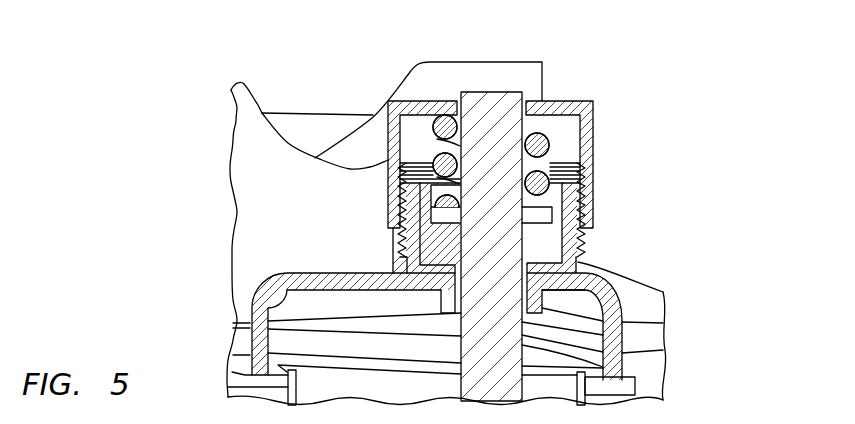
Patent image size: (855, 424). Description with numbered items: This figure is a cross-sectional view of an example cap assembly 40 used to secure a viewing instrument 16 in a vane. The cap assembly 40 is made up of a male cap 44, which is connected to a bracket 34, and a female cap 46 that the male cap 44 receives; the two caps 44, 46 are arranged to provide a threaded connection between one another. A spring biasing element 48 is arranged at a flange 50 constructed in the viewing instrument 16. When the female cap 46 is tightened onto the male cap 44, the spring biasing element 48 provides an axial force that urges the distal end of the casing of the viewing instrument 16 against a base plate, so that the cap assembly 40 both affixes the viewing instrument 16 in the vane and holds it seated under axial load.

The viewing instrument 16 is at (492, 110).
The bracket 34 is at (316, 273).
The cap assembly 40 is at (608, 84).
The male cap 44 is at (578, 257).
The female cap 46 is at (593, 186).
The spring biasing element 48 is at (550, 145).
The flange 50 is at (402, 247).